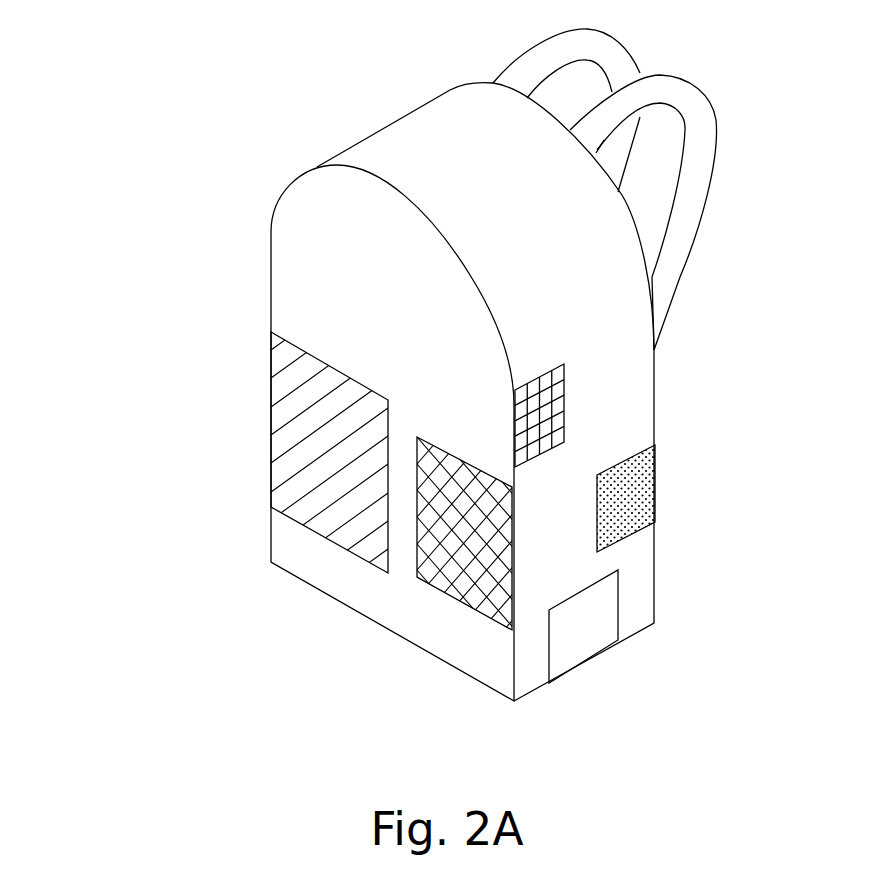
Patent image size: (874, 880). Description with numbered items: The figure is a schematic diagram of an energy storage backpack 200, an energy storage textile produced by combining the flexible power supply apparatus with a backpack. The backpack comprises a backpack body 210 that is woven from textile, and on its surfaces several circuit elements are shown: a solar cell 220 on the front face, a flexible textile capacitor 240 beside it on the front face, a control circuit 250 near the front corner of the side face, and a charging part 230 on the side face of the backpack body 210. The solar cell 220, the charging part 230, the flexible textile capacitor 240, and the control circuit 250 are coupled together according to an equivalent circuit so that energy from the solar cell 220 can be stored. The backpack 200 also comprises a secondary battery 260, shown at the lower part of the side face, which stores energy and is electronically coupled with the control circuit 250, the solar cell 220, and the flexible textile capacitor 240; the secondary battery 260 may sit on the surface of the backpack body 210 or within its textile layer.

The energy storage backpack 200 is at (254, 68).
The backpack body 210 is at (610, 413).
The solar cell 220 is at (287, 425).
The charging part 230 is at (637, 487).
The flexible textile capacitor 240 is at (452, 590).
The control circuit 250 is at (545, 404).
The secondary battery 260 is at (602, 610).